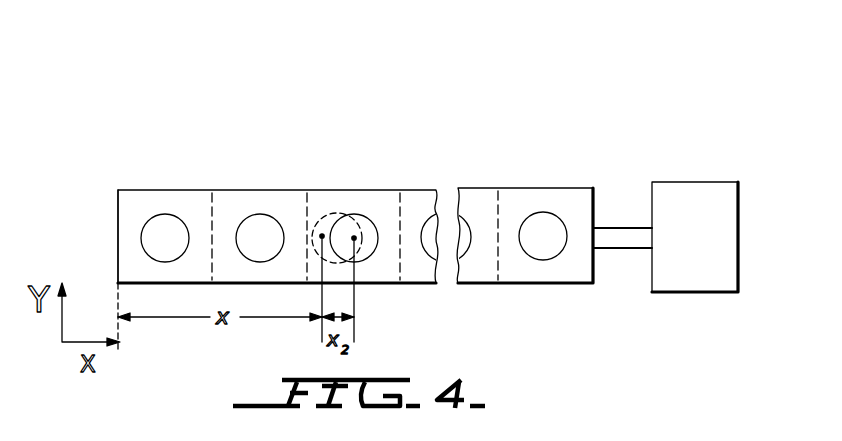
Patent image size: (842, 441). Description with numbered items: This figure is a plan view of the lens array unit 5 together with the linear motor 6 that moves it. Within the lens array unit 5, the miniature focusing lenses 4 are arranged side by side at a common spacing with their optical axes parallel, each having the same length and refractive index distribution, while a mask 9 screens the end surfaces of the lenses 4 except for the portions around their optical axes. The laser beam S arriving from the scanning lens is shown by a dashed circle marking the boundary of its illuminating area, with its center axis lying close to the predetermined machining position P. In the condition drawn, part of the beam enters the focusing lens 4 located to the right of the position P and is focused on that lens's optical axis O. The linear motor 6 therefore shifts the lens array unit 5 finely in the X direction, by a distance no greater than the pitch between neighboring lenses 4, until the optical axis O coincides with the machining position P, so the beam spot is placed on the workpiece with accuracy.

The miniature focusing lens 4 is at (377, 232).
The lens array unit 5 is at (145, 190).
The linear motor 6 is at (698, 292).
The mask 9 is at (182, 190).
The laser beam S is at (333, 212).
The machining position P is at (322, 236).
The optical axis O is at (356, 236).